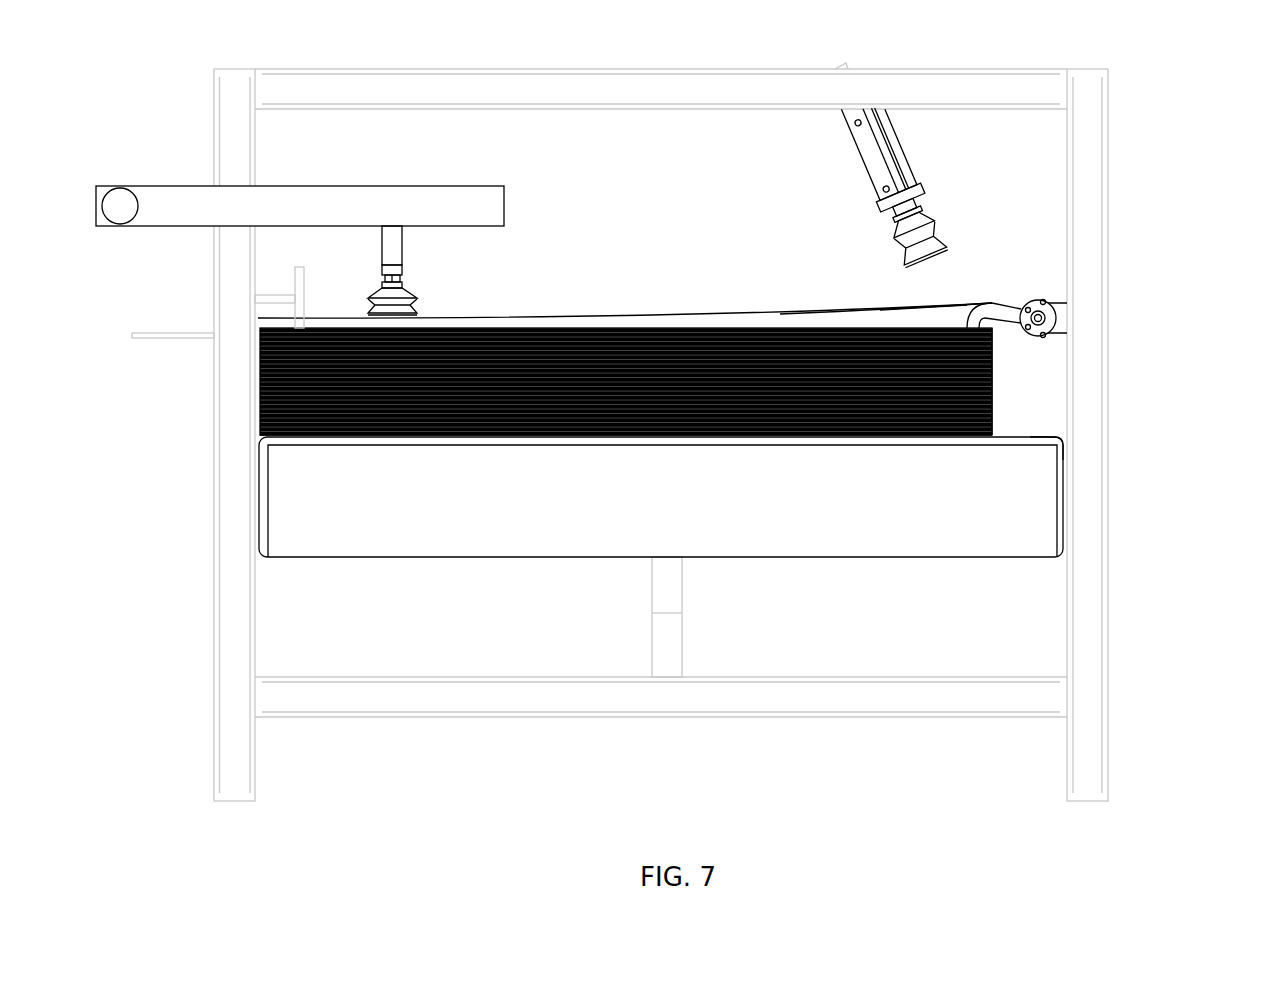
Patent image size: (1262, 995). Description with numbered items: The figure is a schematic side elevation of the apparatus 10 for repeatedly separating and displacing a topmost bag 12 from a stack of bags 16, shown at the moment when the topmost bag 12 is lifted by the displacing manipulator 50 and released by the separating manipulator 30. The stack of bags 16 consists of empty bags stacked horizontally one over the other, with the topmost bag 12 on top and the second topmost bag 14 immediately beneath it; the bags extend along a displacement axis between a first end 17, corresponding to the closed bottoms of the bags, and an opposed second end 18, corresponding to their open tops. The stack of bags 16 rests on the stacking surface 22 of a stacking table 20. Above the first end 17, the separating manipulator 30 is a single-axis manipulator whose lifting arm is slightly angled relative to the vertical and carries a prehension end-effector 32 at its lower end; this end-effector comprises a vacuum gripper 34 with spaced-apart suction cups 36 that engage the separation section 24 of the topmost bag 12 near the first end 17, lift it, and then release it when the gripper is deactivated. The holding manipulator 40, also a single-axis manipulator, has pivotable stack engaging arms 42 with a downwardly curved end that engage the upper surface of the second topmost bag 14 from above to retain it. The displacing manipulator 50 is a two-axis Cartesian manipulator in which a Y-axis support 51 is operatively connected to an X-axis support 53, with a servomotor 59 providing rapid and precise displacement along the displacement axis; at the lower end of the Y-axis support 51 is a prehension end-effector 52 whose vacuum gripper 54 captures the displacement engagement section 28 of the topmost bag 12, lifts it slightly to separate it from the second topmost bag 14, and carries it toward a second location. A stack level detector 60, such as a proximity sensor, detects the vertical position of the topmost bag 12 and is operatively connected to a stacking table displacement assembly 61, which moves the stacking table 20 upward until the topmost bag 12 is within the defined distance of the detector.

The apparatus 10 is at (1200, 71).
The topmost bag 12 is at (587, 318).
The second topmost bag 14 is at (852, 311).
The stack of bags 16 is at (565, 436).
The first end 17 is at (993, 400).
The second end 18 is at (259, 397).
The stacking table 20 is at (1040, 499).
The stacking surface 22 is at (1037, 436).
The separation section 24 is at (902, 297).
The displacement engagement section 28 is at (381, 323).
The separating manipulator 30 is at (913, 159).
The prehension end-effector 32 is at (892, 237).
The vacuum gripper 34 is at (903, 204).
The suction cups 36 is at (917, 237).
The holding manipulator 40 is at (1051, 348).
The pivotable stack engaging arms 42 is at (1000, 300).
The displacing manipulator 50 is at (350, 222).
The Y-axis support 51 is at (389, 251).
The prehension end-effector 52 is at (418, 286).
The X-axis support 53 is at (319, 200).
The vacuum gripper 54 is at (426, 303).
The servomotor 59 is at (118, 200).
The stack level detector 60 is at (302, 275).
The stacking table displacement assembly 61 is at (668, 655).